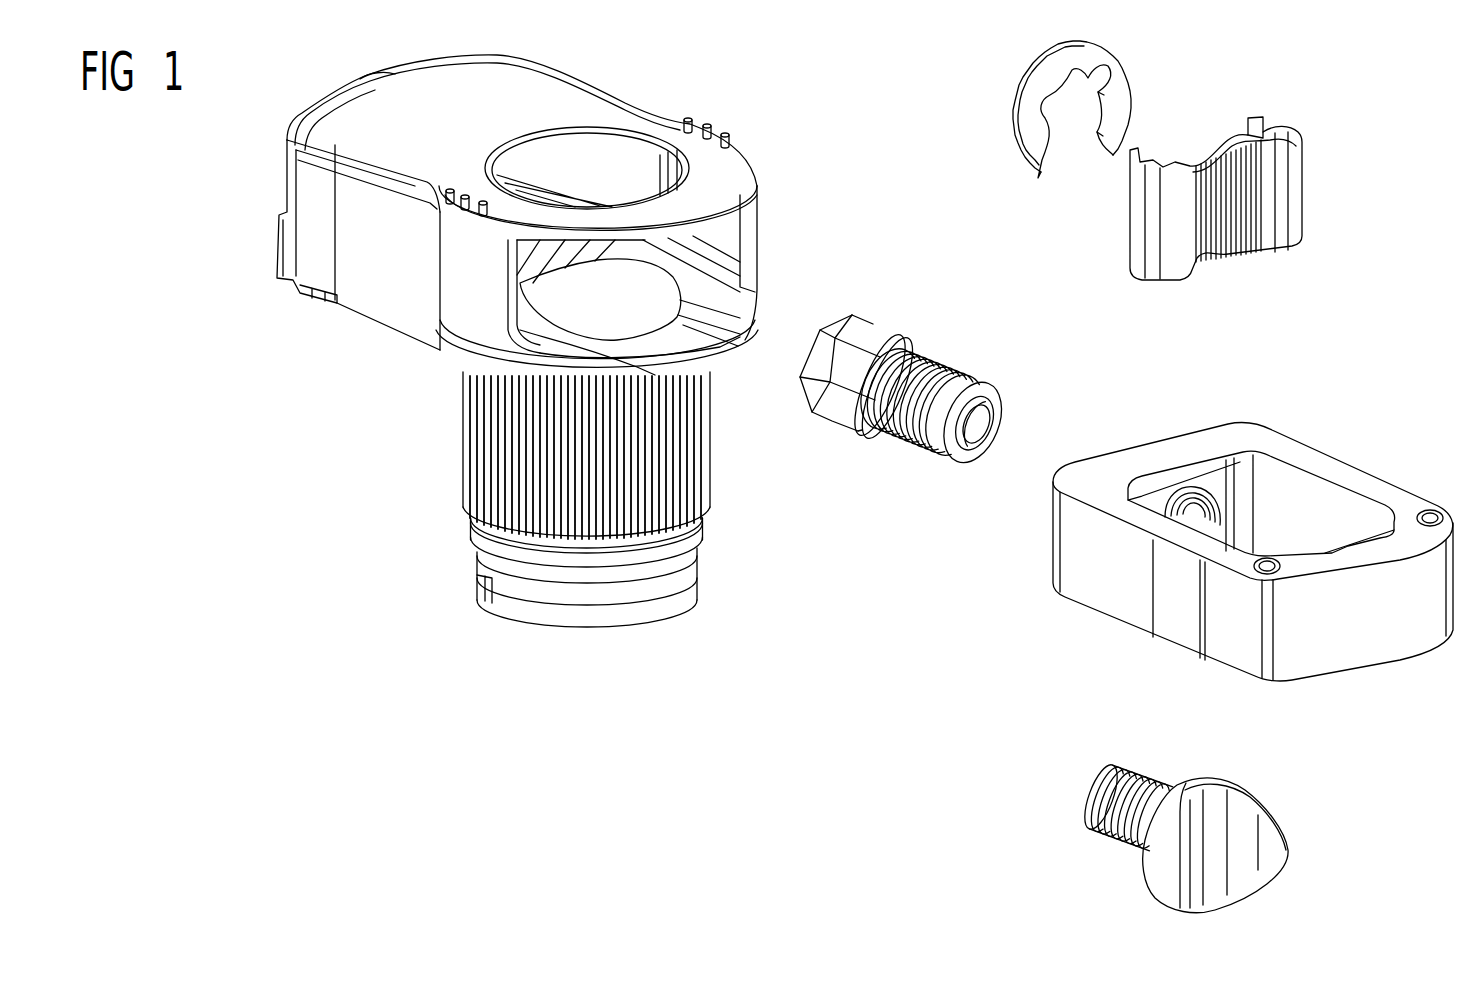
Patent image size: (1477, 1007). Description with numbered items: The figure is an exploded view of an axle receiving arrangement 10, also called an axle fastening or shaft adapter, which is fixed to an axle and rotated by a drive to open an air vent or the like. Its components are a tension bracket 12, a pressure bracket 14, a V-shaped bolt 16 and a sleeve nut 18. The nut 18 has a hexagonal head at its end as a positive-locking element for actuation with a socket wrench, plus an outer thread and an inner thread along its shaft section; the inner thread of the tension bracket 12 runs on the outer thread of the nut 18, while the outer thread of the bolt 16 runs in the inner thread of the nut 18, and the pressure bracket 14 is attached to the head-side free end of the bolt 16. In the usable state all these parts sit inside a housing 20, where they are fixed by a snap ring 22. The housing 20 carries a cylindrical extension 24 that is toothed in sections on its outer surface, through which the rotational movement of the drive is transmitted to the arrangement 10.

The axle receiving arrangement 10 is at (652, 768).
The tension bracket 12 is at (1393, 650).
The pressure bracket 14 is at (1279, 212).
The bolt 16 is at (1110, 828).
The nut 18 is at (923, 365).
The housing 20 is at (600, 102).
The snap ring 22 is at (1123, 90).
The cylindrical extension 24 is at (485, 458).